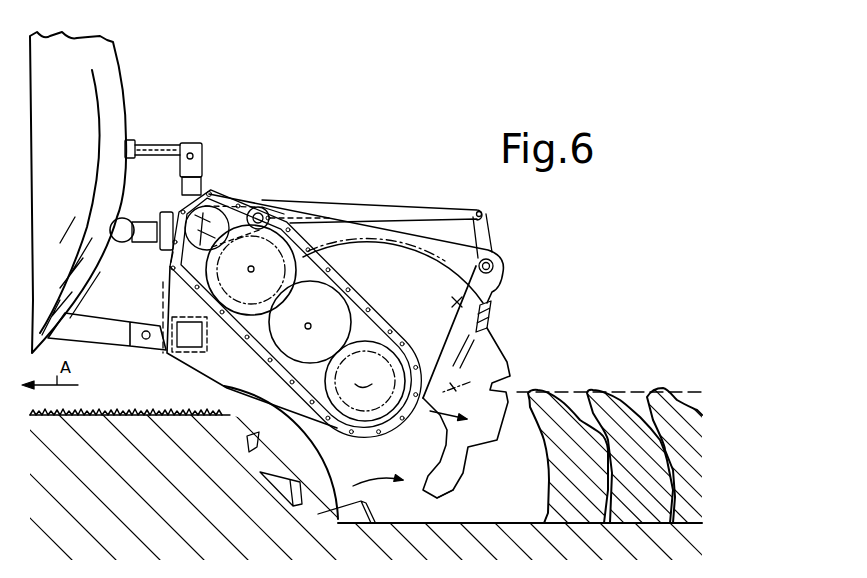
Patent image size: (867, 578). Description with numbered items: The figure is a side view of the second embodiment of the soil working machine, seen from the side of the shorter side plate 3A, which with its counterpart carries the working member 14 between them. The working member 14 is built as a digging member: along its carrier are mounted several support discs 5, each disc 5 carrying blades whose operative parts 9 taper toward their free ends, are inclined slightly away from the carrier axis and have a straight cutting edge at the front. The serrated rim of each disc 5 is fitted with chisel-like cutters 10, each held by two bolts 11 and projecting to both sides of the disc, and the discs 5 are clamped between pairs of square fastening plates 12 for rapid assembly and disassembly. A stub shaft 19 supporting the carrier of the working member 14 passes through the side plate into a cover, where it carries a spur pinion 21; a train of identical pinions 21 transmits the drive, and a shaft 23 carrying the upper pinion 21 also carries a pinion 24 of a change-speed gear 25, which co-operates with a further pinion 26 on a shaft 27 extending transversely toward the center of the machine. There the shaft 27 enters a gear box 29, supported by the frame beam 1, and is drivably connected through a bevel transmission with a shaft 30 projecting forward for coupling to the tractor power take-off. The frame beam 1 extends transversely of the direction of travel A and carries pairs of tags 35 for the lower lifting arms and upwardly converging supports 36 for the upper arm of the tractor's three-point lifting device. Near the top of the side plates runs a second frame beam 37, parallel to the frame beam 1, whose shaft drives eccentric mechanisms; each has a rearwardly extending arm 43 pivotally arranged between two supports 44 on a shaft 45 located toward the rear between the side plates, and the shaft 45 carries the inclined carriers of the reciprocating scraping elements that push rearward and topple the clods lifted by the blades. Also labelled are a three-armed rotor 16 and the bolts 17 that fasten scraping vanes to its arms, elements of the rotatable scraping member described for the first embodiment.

The frame beam 1 is at (170, 360).
The side plate 3A is at (367, 230).
The support disc 5 is at (453, 467).
The operative part 9 is at (272, 474).
The cutter 10 is at (360, 294).
The bolts 11 is at (317, 182).
The fastening plates 12 is at (277, 192).
The working member 14 is at (453, 492).
The rotor 16 is at (447, 298).
The bolts 17 is at (468, 382).
The stub shaft 19 is at (365, 381).
The spur pinion 21 is at (327, 252).
The shaft 23 is at (251, 270).
The pinion 24 is at (188, 353).
The change-speed gear 25 is at (297, 203).
The pinion 26 is at (212, 195).
The shaft 27 is at (170, 261).
The gear box 29 is at (170, 210).
The shaft 30 is at (162, 215).
The tags 35 is at (147, 315).
The supports 36 is at (203, 160).
The frame beam 37 is at (252, 198).
The arm 43 is at (418, 208).
The supports 44 is at (490, 232).
The shaft 45 is at (495, 266).